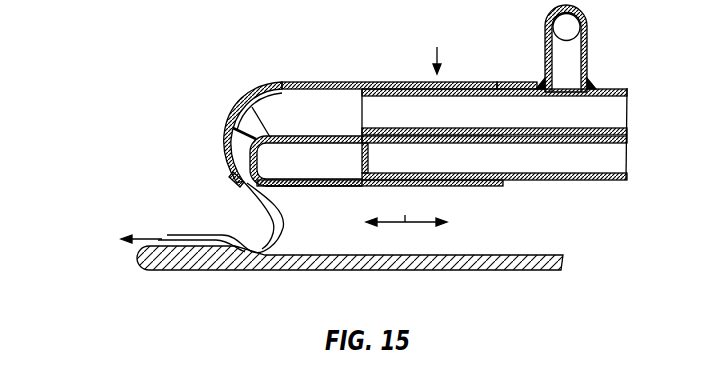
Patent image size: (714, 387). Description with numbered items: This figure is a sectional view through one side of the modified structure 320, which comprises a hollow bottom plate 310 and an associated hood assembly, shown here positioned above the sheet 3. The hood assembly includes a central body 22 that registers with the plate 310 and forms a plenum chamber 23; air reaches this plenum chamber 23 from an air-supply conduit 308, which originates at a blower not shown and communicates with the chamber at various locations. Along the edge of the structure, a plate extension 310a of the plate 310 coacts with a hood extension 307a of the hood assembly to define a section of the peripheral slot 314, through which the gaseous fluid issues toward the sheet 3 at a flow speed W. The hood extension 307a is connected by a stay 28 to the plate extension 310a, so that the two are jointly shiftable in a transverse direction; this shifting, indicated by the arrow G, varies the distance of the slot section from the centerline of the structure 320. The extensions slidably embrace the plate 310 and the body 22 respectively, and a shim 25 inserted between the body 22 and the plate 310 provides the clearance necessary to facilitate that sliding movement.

The hood extension 307a is at (298, 81).
The stay 28 is at (247, 120).
The peripheral slot 314 is at (233, 170).
The plenum chamber 23 is at (392, 105).
The shim 25 is at (623, 137).
The bottom plate 310 is at (557, 166).
The plate extension 310a is at (303, 188).
The central body 22 is at (522, 88).
The air-supply conduit 308 is at (587, 40).
The modified structure 320 is at (430, 48).
The sheet 3 is at (377, 272).
The flow speed W is at (127, 241).
The arrow G is at (406, 211).